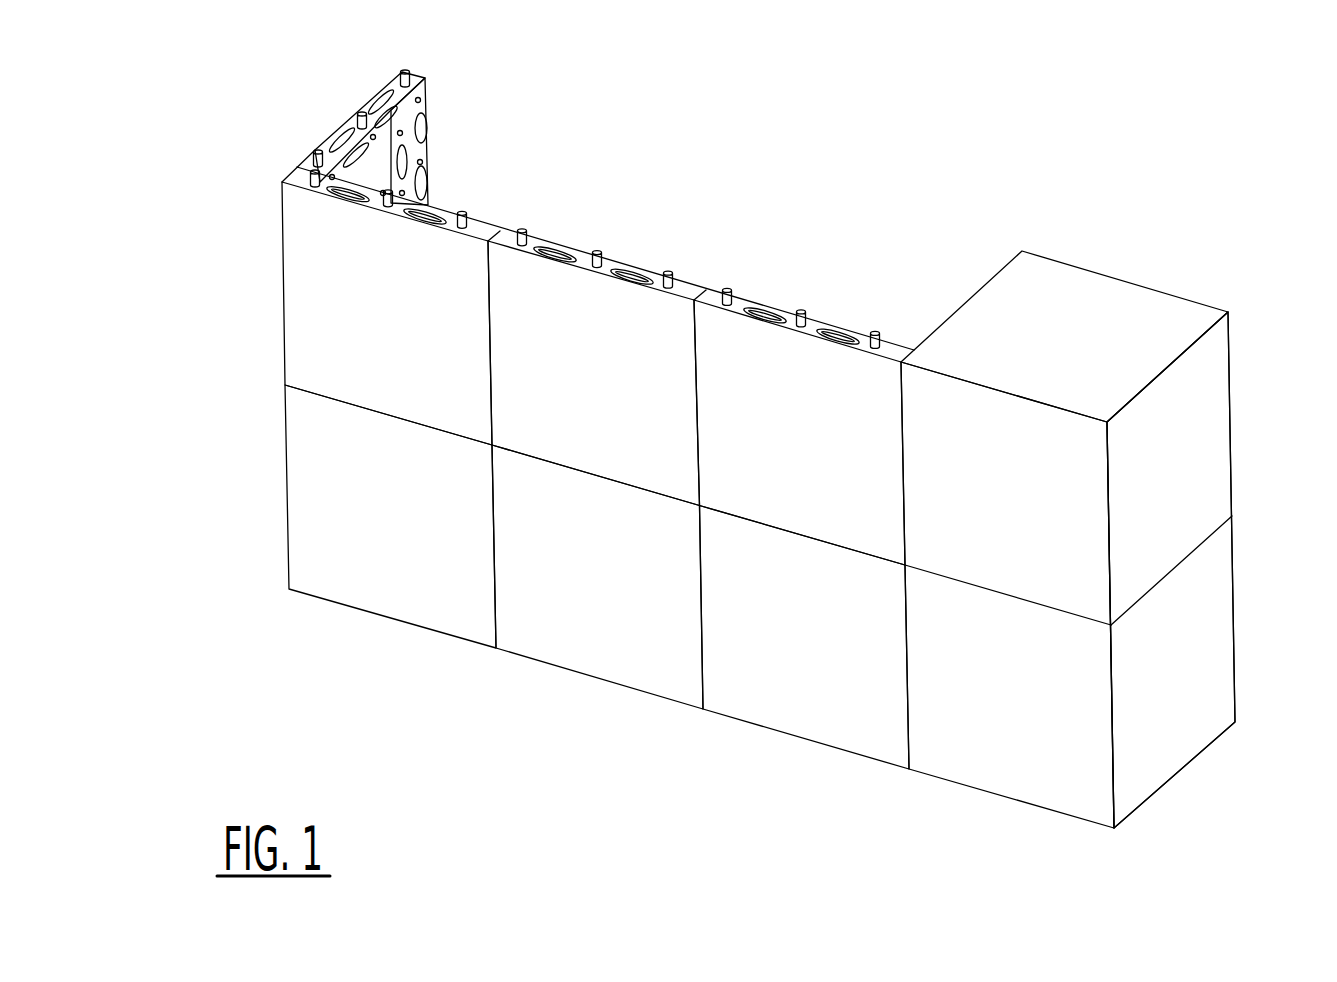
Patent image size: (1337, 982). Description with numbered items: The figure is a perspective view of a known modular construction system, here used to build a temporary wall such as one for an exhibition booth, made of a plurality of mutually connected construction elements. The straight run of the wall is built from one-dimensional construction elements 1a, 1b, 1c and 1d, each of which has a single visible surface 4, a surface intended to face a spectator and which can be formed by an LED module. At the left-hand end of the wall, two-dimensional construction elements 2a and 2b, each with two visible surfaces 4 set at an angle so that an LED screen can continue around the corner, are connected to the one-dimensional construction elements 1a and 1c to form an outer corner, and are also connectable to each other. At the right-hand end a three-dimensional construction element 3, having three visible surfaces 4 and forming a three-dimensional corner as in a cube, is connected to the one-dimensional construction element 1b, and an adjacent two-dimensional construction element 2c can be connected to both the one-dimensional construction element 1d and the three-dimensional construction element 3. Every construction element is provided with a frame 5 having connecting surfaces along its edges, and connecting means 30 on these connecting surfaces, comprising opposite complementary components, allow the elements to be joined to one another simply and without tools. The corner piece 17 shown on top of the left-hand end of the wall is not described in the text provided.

The one-dimensional construction element 1a is at (560, 177).
The one-dimensional construction element 1b is at (810, 237).
The one-dimensional construction element 1c is at (535, 720).
The one-dimensional construction element 1d is at (742, 784).
The two-dimensional construction element 2a is at (222, 268).
The two-dimensional construction element 2b is at (217, 500).
The two-dimensional construction element 2c is at (1190, 838).
The three-dimensional construction element 3 is at (1122, 222).
The visible surface 4 is at (779, 504).
The frame 5 is at (424, 100).
The corner connecting piece 17 is at (362, 113).
The connecting means 30 is at (464, 213).